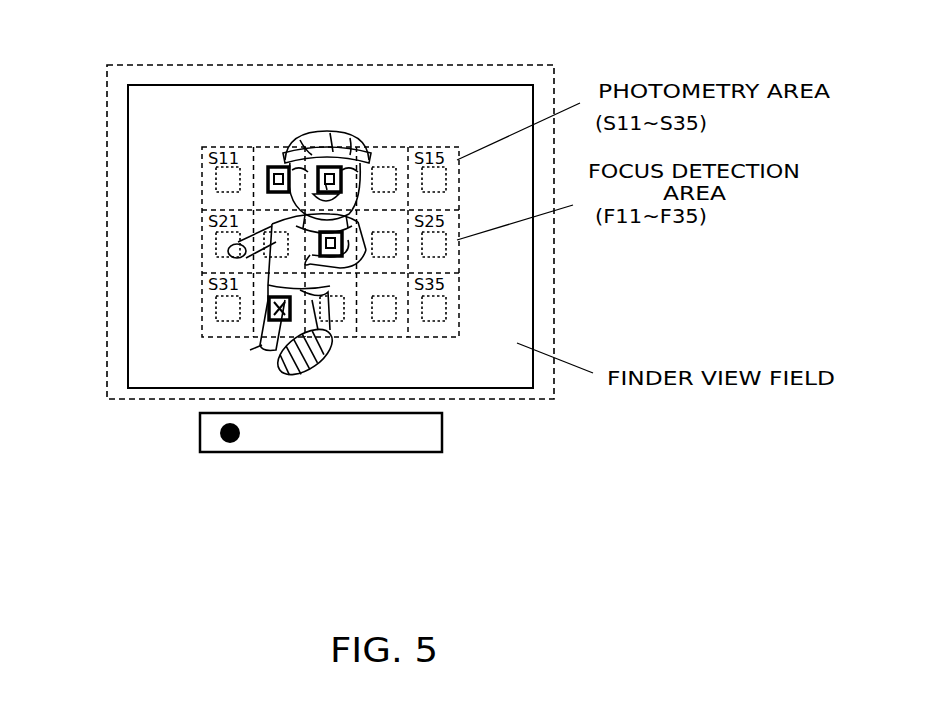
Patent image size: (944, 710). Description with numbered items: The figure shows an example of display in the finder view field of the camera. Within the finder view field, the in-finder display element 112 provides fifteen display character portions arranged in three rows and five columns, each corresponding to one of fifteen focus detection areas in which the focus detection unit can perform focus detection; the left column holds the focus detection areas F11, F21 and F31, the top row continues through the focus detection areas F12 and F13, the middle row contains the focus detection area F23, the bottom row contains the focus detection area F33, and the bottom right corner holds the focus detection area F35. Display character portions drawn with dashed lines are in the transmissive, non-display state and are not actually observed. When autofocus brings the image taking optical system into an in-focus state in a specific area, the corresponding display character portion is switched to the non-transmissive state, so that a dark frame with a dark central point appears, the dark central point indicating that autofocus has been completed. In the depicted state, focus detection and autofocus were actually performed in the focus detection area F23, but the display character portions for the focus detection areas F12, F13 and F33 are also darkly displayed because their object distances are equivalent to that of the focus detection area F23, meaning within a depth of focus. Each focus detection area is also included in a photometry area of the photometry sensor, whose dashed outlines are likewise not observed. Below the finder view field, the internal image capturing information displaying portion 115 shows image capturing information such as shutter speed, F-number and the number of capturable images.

The in-finder display element 112 is at (451, 77).
The internal image capturing information displaying portion 115 is at (387, 452).
The focus detection area F11 is at (212, 178).
The focus detection area F12 is at (270, 167).
The focus detection area F13 is at (320, 167).
The focus detection area F21 is at (212, 252).
The focus detection area F23 is at (342, 232).
The focus detection area F31 is at (212, 312).
The focus detection area F33 is at (270, 318).
The focus detection area F35 is at (440, 320).